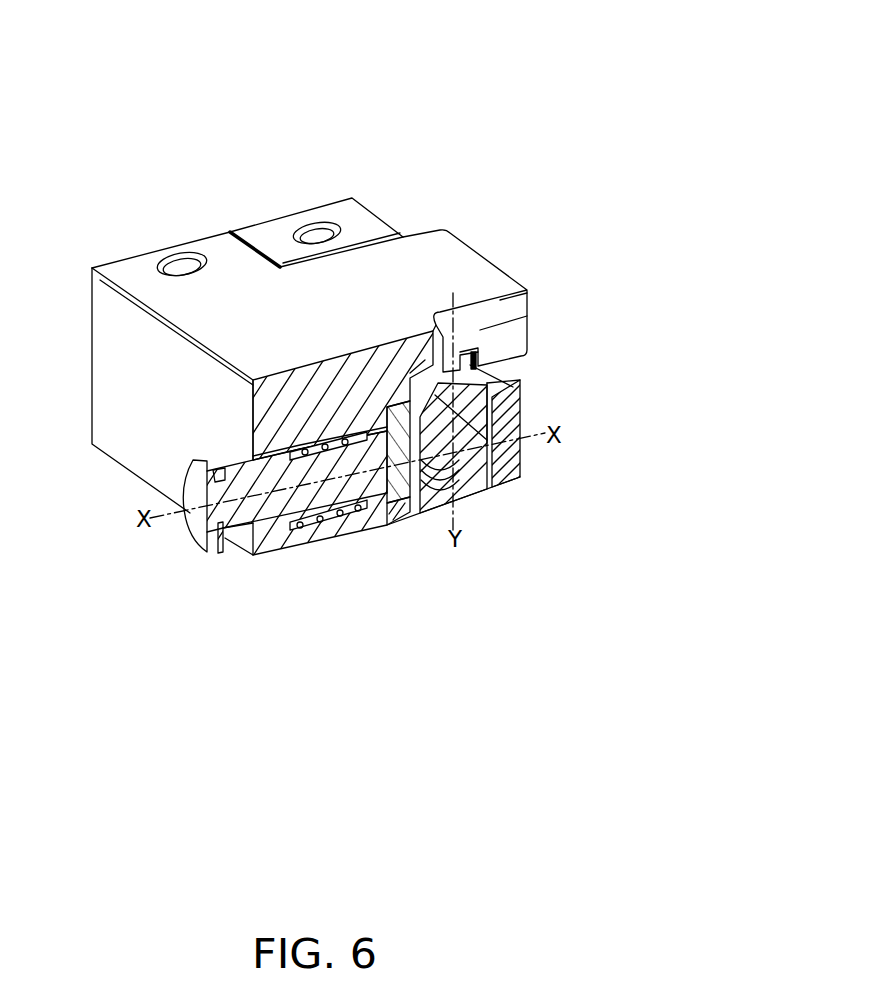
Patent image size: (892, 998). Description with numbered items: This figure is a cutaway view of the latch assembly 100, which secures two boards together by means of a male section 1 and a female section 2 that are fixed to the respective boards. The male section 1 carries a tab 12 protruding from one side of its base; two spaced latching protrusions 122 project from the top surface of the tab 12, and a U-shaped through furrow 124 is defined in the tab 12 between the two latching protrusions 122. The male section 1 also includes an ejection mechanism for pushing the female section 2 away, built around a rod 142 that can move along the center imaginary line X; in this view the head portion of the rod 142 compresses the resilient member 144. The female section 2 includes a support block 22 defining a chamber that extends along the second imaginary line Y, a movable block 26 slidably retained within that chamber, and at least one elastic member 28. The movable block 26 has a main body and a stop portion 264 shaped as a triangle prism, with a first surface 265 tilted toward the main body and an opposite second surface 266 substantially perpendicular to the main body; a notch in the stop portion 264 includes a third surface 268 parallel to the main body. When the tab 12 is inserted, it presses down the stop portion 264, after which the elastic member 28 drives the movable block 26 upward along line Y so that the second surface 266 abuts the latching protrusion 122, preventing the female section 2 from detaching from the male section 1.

The latch assembly 100 is at (496, 58).
The male section 1 is at (118, 357).
The female section 2 is at (275, 228).
The tab 12 is at (450, 262).
The latching protrusion 122 is at (497, 338).
The U-shaped through furrow 124 is at (505, 320).
The rod 142 is at (193, 503).
The resilient member 144 is at (308, 538).
The support block 22 is at (403, 520).
The movable block 26 is at (522, 478).
The elastic member 28 is at (457, 478).
The stop portion 264 is at (482, 385).
The first surface 265 is at (470, 352).
The second surface 266 is at (474, 362).
The third surface 268 is at (455, 405).